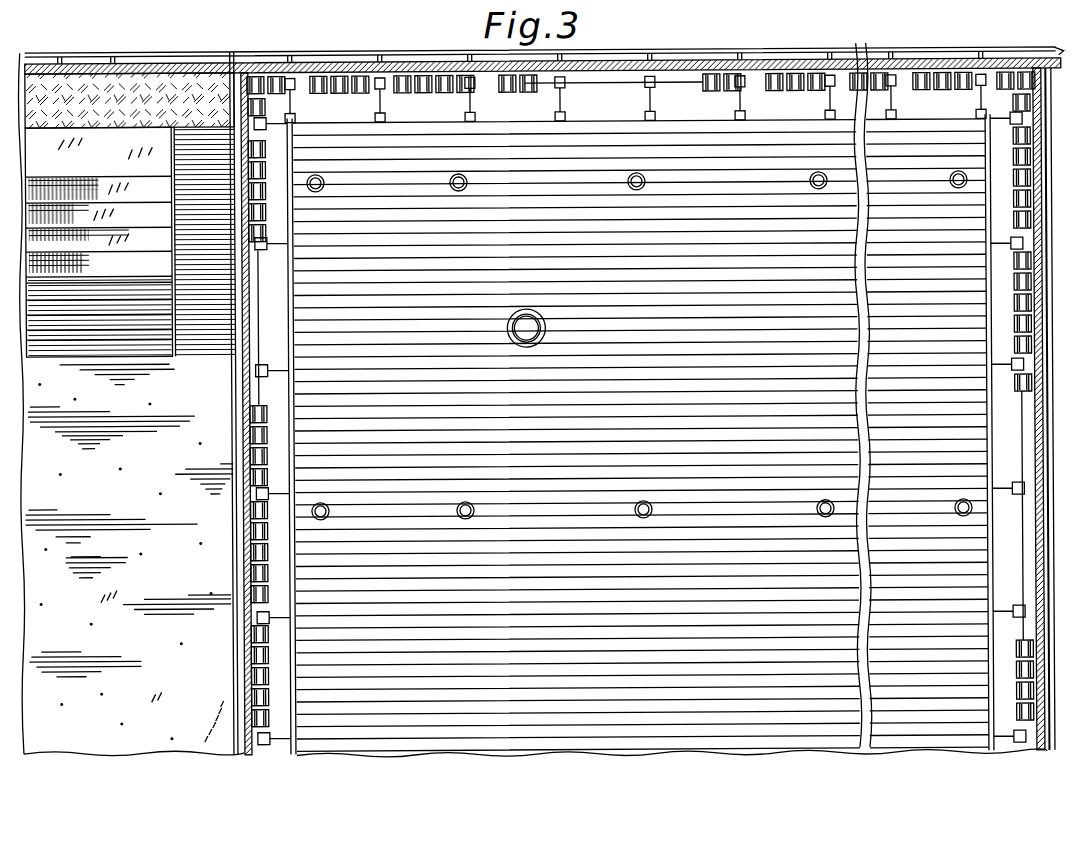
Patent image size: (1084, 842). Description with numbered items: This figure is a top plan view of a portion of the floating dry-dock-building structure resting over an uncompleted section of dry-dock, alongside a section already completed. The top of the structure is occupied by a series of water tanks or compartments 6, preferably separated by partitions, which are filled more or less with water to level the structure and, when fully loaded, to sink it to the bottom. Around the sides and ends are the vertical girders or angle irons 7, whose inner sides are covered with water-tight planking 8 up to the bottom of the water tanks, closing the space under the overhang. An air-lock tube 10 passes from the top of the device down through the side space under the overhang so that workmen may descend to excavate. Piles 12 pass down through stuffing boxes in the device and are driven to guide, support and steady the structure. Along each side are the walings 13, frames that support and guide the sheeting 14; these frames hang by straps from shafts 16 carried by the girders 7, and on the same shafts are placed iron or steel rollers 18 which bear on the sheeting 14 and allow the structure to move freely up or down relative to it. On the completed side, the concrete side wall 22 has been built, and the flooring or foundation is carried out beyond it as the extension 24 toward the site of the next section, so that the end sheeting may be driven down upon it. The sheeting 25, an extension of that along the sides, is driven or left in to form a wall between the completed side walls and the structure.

The water tanks or compartments 6 is at (689, 752).
The vertical girders or angle irons 7 is at (655, 100).
The planking 8 is at (293, 583).
The air-lock tube 10 is at (535, 328).
The piles 12 is at (469, 179).
The walings 13 is at (602, 90).
The sheeting 14 is at (243, 419).
The shafts 16 is at (266, 512).
The rollers 18 is at (266, 436).
The side wall 22 is at (98, 242).
The flooring extension 24 is at (130, 553).
The sheeting extension 25 is at (107, 61).